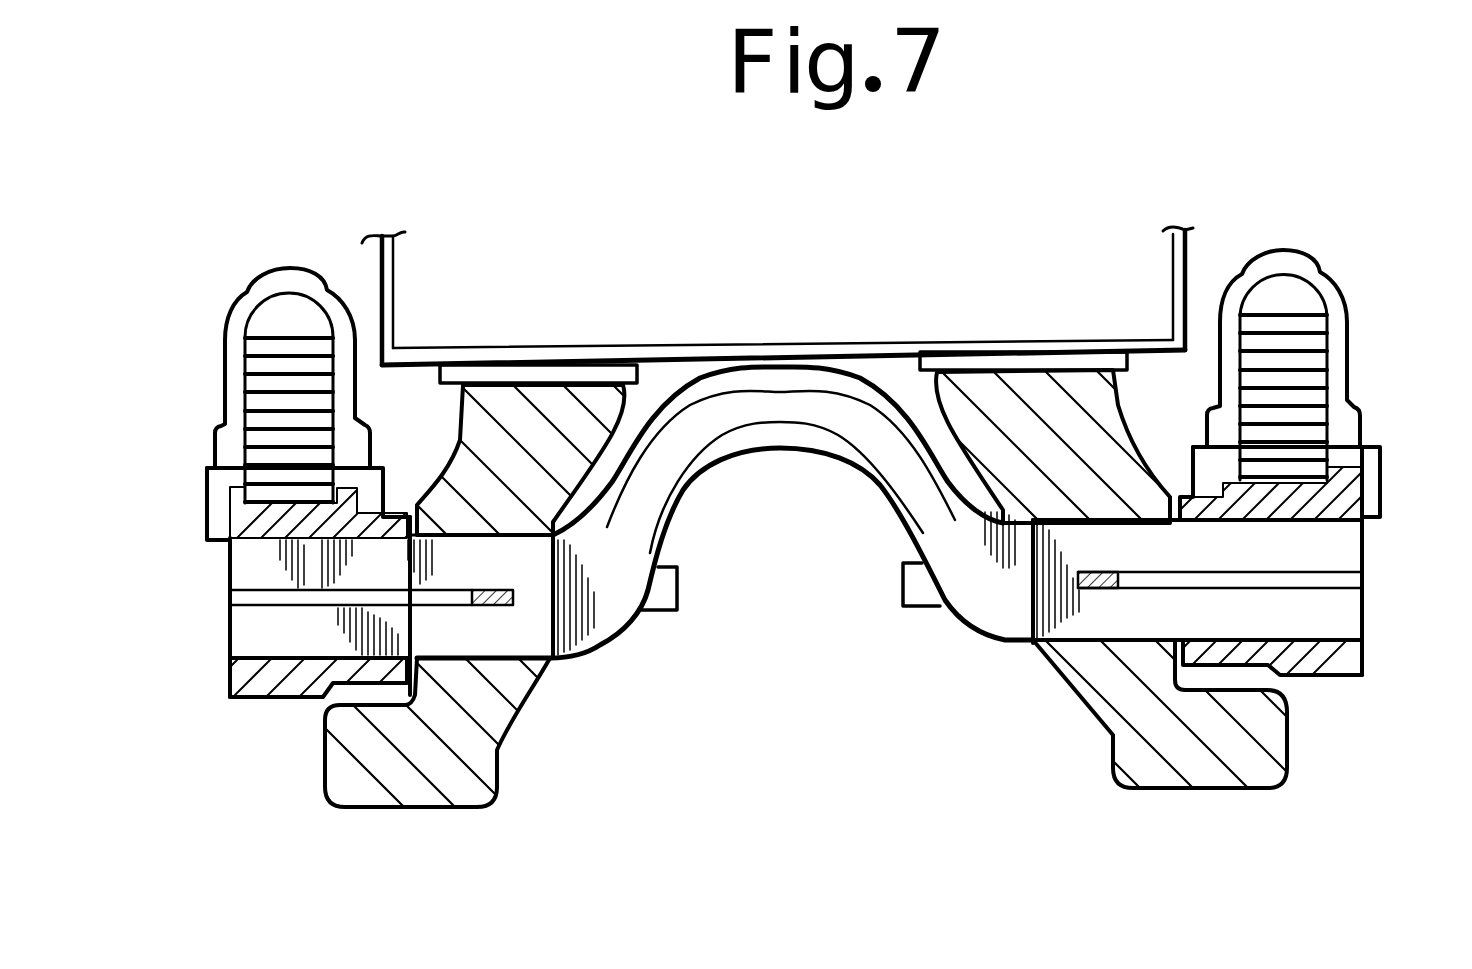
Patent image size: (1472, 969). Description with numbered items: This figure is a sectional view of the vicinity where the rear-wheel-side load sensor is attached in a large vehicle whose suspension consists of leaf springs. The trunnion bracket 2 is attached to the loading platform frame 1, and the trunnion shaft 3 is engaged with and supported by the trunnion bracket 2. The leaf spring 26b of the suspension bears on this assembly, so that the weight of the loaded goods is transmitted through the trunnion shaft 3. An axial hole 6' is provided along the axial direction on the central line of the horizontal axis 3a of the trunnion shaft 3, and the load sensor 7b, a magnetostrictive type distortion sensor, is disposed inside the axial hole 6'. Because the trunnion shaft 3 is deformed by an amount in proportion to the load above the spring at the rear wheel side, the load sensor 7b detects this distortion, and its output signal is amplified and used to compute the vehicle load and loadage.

The loading platform frame 1 is at (392, 293).
The trunnion bracket 2 is at (563, 413).
The trunnion shaft 3 is at (770, 450).
The leaf spring 26b is at (263, 380).
The axial hole 6' is at (804, 572).
The horizontal axis 3a is at (300, 627).
The load sensor 7b is at (493, 583).